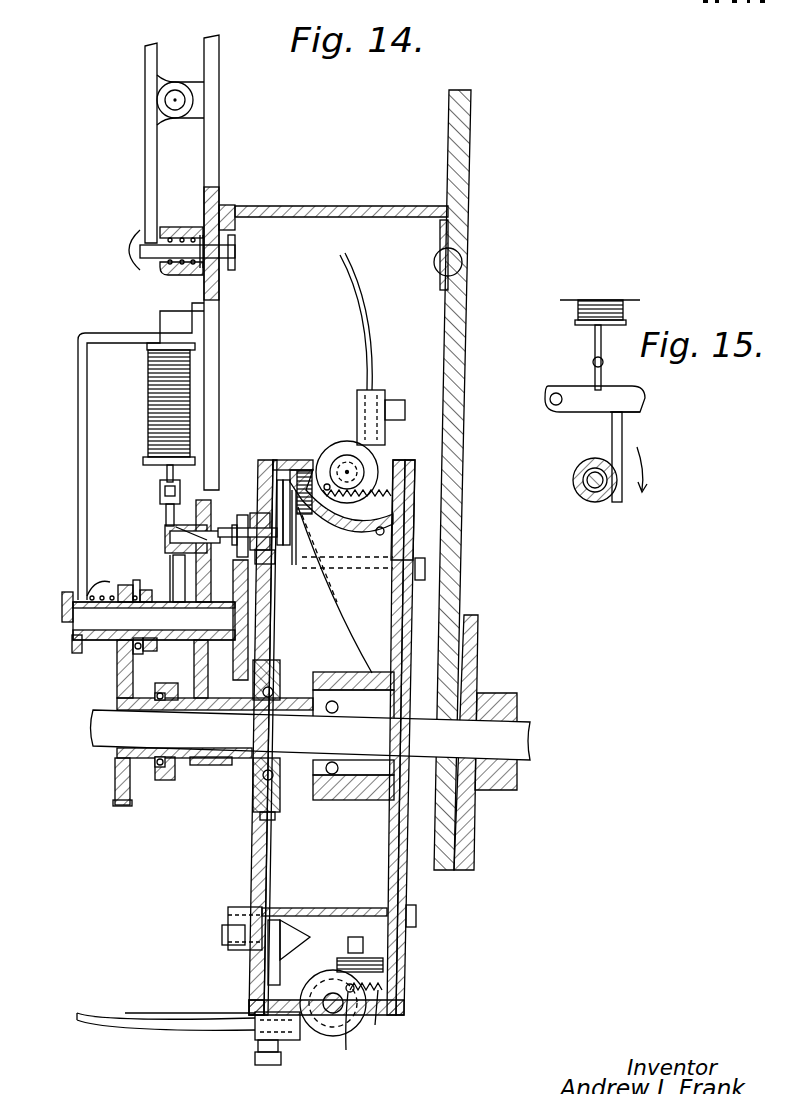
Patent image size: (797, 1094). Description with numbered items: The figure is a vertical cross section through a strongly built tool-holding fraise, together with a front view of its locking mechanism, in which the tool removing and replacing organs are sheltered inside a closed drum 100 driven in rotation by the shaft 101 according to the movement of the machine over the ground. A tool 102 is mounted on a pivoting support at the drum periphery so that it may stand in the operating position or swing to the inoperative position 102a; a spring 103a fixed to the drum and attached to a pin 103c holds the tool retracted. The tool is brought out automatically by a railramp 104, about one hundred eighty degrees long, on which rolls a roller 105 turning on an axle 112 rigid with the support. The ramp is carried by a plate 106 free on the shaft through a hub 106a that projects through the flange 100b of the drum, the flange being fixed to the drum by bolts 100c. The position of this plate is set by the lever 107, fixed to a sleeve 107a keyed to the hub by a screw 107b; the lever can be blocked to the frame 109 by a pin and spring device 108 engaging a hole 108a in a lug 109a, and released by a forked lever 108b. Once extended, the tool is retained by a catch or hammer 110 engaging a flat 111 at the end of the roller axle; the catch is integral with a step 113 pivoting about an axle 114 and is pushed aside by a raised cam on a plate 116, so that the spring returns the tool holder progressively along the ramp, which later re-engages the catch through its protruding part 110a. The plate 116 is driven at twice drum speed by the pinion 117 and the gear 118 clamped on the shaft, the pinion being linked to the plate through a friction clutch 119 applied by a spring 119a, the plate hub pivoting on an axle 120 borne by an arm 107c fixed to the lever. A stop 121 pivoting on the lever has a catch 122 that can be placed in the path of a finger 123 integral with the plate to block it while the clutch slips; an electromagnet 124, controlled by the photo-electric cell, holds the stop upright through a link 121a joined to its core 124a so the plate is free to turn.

In FIG. 14, the closed drum 100 is at (252, 850).
In FIG. 14, the flange 100b is at (250, 875).
In FIG. 14, the bolts 100c is at (404, 902).
In FIG. 14, the shaft 101 is at (505, 730).
In FIG. 14, the tool 102 is at (365, 318).
In FIG. 14, the inoperative position of the tool 102a is at (150, 1016).
In FIG. 14, the spring 103a is at (380, 480).
In FIG. 14, the pin 103c is at (330, 455).
In FIG. 14, the railramp 104 is at (322, 585).
In FIG. 14, the roller 105 is at (337, 964).
In FIG. 14, the plate 106 is at (395, 598).
In FIG. 14, the hub 106a is at (348, 800).
In FIG. 14, the lever 107 is at (219, 322).
In FIG. 14, the sleeve 107a is at (223, 765).
In FIG. 14, the screw 107b is at (200, 780).
In FIG. 14, the arm 107c is at (78, 470).
In FIG. 14, the pin and spring device 108 is at (236, 250).
In FIG. 14, the hole 108a is at (232, 270).
In FIG. 14, the forked lever 108b is at (145, 175).
In FIG. 14, the frame 109 is at (452, 186).
In FIG. 14, the lug 109a is at (322, 194).
In FIG. 14, the catch or hammer 110 is at (278, 505).
In FIG. 14, the protruding part 110a is at (300, 540).
In FIG. 14, the flat 111 is at (302, 471).
In FIG. 14, the axle 112 is at (348, 945).
In FIG. 14, the step 113 is at (238, 558).
In FIG. 14, the axle 114 is at (292, 560).
In FIG. 14, the plate 116 is at (240, 665).
In FIG. 14, the pinion 117 is at (120, 655).
In FIG. 14, the gear 118 is at (115, 778).
In FIG. 14, the friction clutch 119 is at (135, 595).
In FIG. 14, the spring 119a is at (85, 590).
In FIG. 14, the axle 120 is at (185, 618).
In FIG. 14, the stop 121 is at (168, 520).
In FIG. 15, the stop 121 is at (640, 408).
In FIG. 14, the link 121a is at (166, 532).
In FIG. 15, the catch of the stop 122 is at (625, 416).
In FIG. 14, the finger 123 is at (173, 572).
In FIG. 15, the finger 123 is at (622, 443).
In FIG. 14, the electromagnet 124 is at (148, 396).
In FIG. 15, the electromagnet 124 is at (578, 312).
In FIG. 14, the core 124a is at (167, 473).